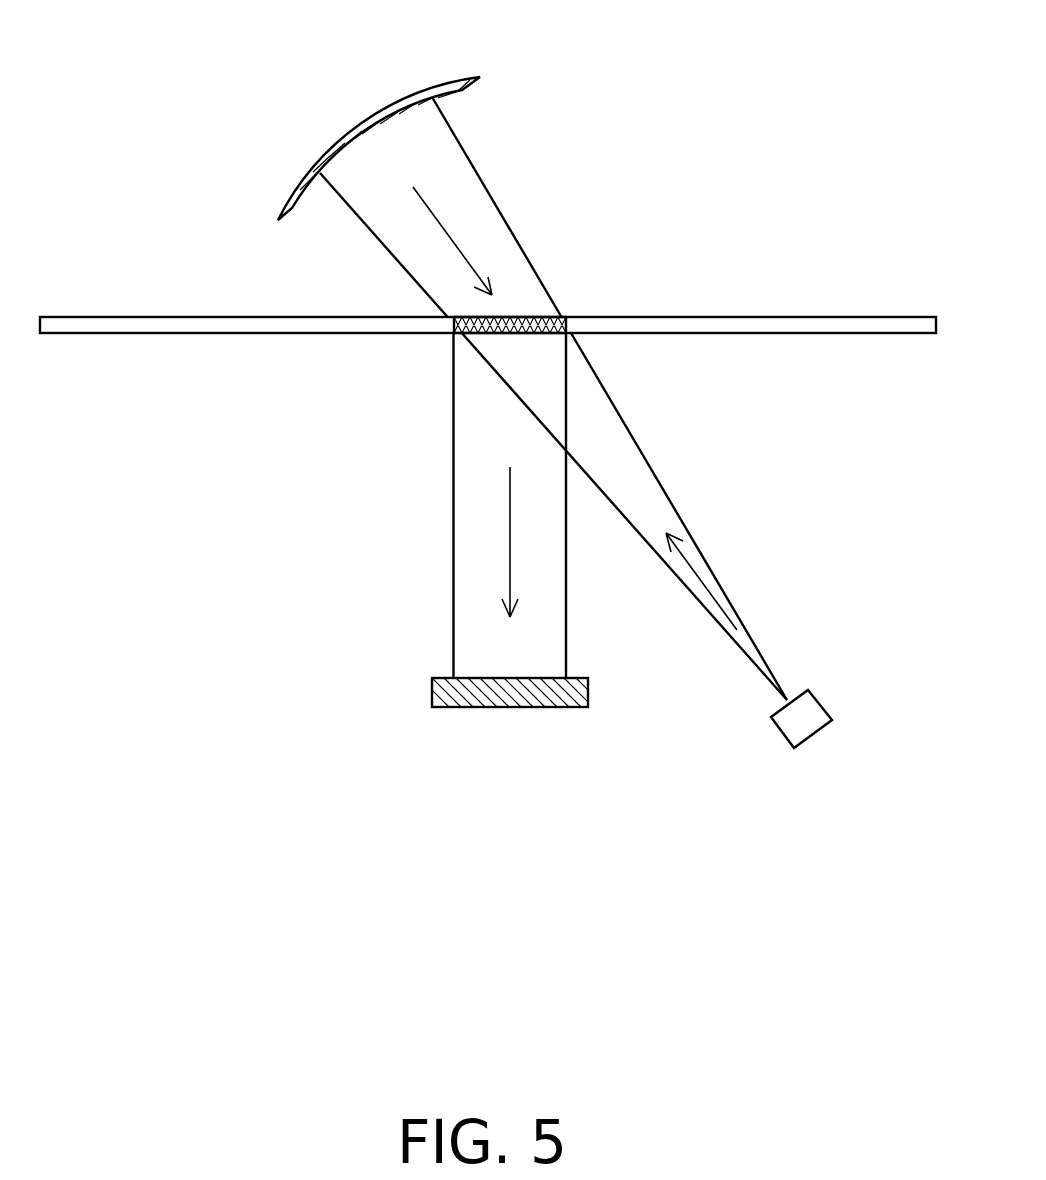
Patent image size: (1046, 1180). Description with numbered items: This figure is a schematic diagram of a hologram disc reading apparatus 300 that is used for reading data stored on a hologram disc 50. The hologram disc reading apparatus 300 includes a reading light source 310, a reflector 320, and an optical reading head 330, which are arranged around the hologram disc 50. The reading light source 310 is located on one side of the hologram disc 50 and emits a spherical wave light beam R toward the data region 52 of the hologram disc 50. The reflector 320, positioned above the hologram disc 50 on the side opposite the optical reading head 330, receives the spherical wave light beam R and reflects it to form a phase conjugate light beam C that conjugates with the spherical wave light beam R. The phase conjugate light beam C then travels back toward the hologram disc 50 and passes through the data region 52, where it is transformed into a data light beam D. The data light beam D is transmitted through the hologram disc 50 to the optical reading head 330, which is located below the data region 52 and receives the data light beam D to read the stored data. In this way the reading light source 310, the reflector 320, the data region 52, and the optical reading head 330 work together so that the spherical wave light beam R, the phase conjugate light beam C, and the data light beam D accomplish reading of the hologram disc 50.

The hologram disc reading apparatus 300 is at (500, 432).
The reading light source 310 is at (803, 717).
The reflector 320 is at (453, 76).
The optical reading head 330 is at (502, 692).
The hologram disc 50 is at (846, 324).
The data region 52 is at (527, 317).
The phase conjugate light beam C is at (470, 260).
The data light beam D is at (508, 533).
The spherical wave light beam R is at (703, 580).